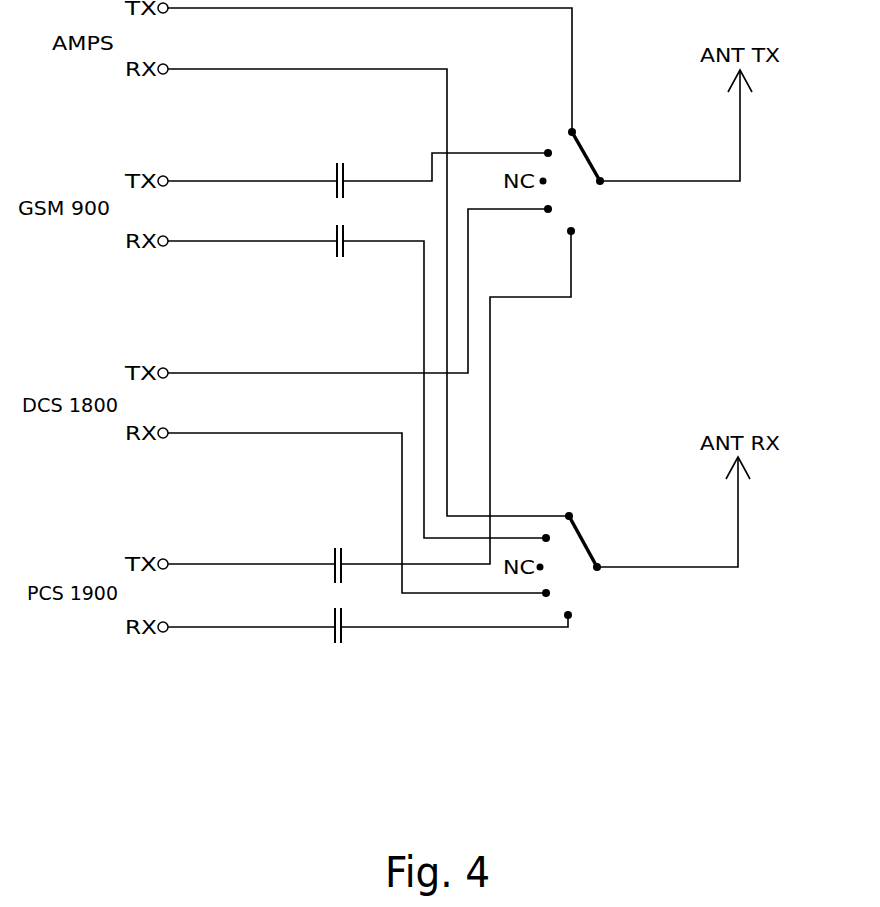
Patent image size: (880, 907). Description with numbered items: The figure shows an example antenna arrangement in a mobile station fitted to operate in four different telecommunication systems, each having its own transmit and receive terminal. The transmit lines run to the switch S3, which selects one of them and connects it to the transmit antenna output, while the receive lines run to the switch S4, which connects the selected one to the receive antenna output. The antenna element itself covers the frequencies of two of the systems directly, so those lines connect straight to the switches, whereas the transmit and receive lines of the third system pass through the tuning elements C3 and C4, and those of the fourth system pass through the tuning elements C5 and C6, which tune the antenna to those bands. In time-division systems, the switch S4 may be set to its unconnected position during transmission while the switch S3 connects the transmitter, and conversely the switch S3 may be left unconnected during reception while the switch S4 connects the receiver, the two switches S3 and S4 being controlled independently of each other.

The tuning element C3 is at (344, 194).
The tuning element C4 is at (344, 254).
The tuning element C5 is at (342, 579).
The tuning element C6 is at (342, 639).
The switch S3 is at (586, 159).
The switch S4 is at (584, 545).